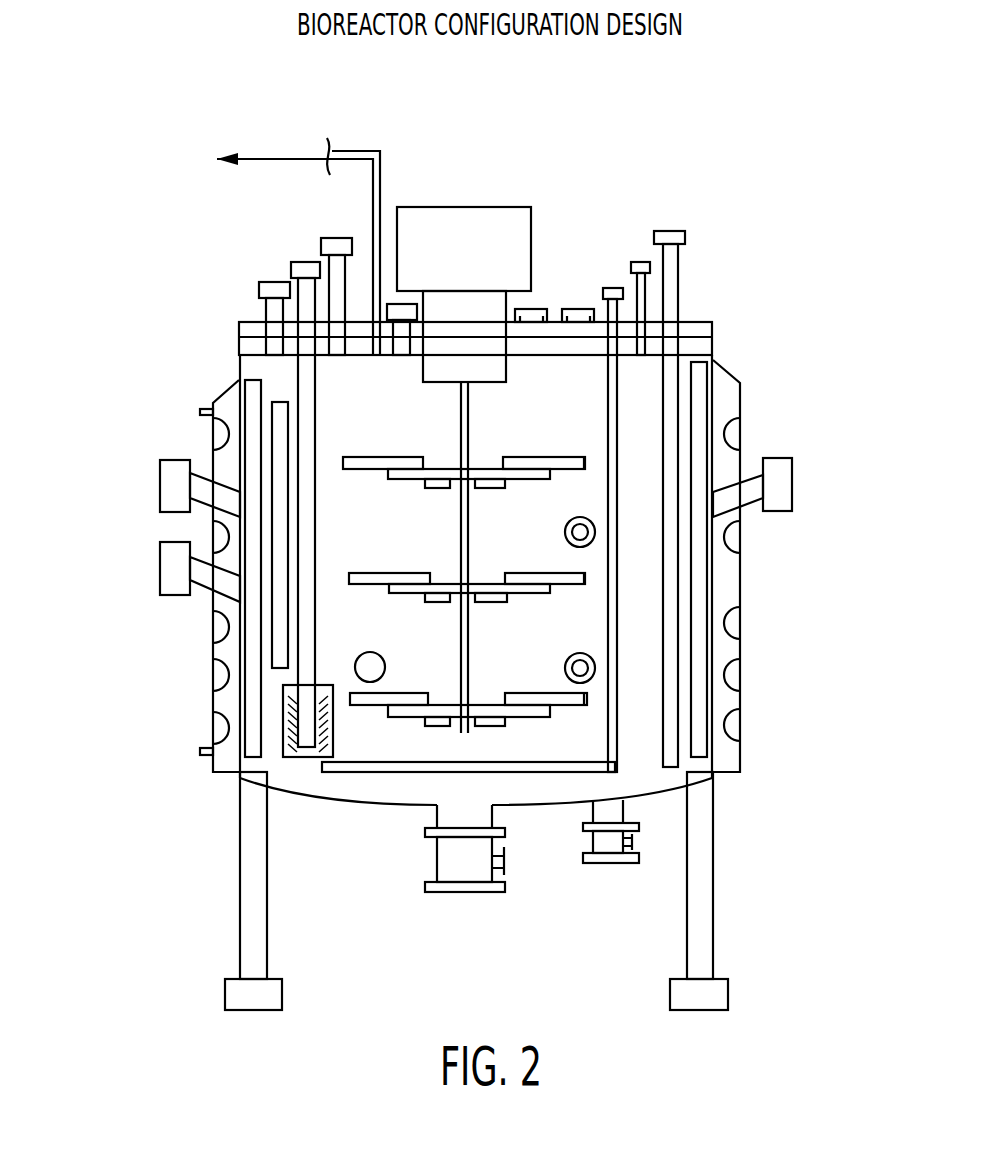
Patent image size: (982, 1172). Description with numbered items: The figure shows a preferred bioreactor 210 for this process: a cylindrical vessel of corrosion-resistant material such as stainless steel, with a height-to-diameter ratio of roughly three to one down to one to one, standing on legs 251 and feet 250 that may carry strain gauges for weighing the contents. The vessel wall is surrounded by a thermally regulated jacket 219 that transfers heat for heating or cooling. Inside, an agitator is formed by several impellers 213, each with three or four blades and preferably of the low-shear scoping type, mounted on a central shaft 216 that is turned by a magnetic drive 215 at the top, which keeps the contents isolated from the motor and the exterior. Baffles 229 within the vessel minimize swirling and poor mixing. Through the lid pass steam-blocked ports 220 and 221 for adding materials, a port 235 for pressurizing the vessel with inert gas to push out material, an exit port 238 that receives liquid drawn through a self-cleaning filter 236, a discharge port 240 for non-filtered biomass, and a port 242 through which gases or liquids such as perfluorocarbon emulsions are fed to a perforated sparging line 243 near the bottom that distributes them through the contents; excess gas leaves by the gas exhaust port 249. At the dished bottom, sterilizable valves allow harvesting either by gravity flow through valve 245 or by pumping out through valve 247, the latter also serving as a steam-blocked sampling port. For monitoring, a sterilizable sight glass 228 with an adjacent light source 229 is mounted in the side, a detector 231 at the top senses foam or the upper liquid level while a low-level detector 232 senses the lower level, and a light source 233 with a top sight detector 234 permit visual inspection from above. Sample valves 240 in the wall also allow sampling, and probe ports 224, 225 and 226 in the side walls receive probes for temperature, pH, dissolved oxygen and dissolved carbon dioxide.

The bioreactor 210 is at (722, 342).
The impellers 213 is at (586, 463).
The magnetic drive 215 is at (470, 199).
The central shaft 216 is at (470, 425).
The thermally regulated jacket 219 is at (745, 600).
The steam-blocked port 220 is at (330, 238).
The steam-blocked port 221 is at (259, 290).
The probe port 224 is at (800, 482).
The probe port 225 is at (153, 482).
The probe port 226 is at (153, 565).
The sterilizable sight glass 228 is at (281, 650).
The baffles / light source 229 is at (259, 741).
The detector 231 is at (400, 357).
The low-level detector 232 is at (387, 663).
The light source 233 is at (575, 308).
The top sight detector 234 is at (537, 308).
The port 235 is at (638, 262).
The self-cleaning filter 236 is at (293, 760).
The exit port 238 is at (290, 262).
The discharge port / sample valve 240 is at (680, 284).
The port 242 is at (611, 288).
The perforated sparging line 243 is at (619, 760).
The valve 245 is at (466, 893).
The valve 247 is at (612, 865).
The gas exhaust port 249 is at (357, 150).
The feet 250 is at (225, 993).
The legs 251 is at (240, 880).